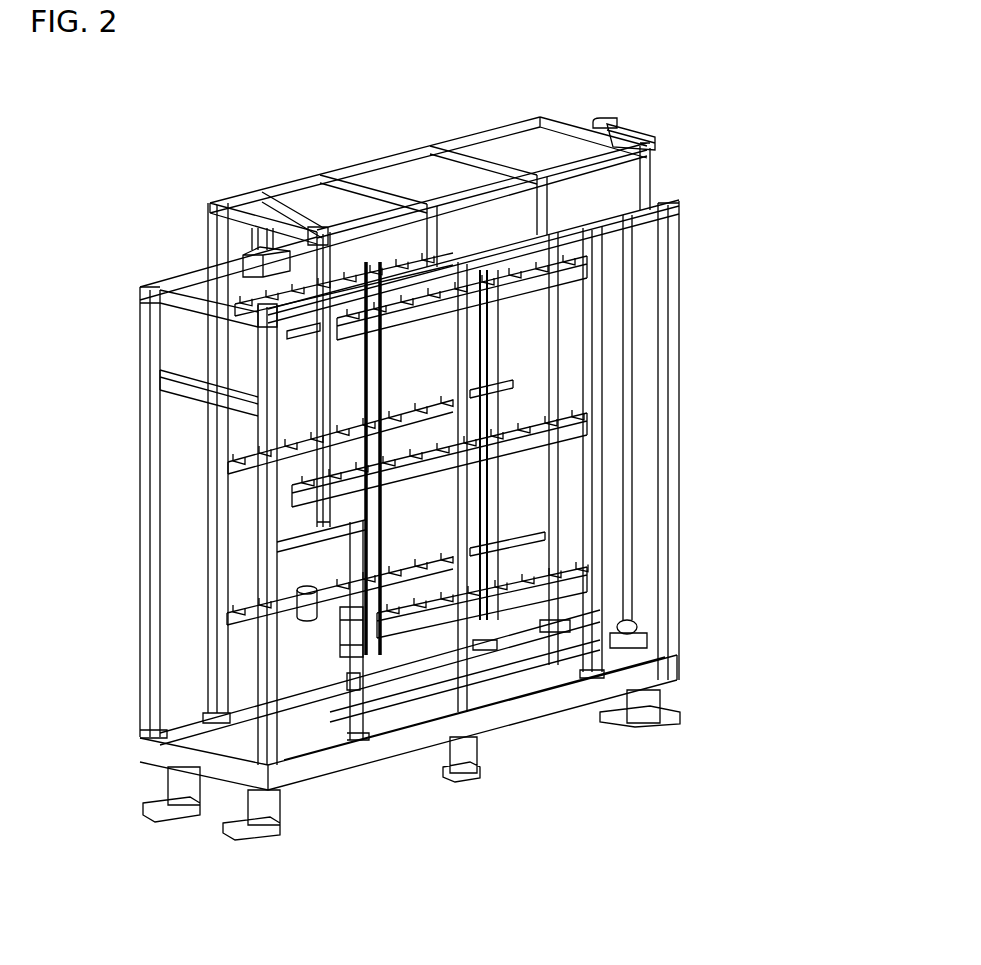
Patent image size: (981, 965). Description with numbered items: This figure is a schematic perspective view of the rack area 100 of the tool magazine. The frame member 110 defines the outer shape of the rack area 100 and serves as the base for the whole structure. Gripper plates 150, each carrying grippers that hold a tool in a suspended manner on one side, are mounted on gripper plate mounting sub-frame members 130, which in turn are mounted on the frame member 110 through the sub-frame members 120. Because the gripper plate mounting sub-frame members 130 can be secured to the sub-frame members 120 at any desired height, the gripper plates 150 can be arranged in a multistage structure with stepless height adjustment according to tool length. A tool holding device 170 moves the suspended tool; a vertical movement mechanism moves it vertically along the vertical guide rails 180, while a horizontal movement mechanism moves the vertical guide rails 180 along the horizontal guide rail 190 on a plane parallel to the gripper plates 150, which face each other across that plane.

The rack area 100 is at (763, 311).
The frame member 110 is at (663, 210).
The sub-frame members 120 is at (545, 553).
The gripper plate mounting sub-frame members 130 is at (548, 588).
The gripper plates 150 is at (280, 292).
The tool holding device 170 is at (305, 600).
The vertical guide rails 180 is at (250, 413).
The horizontal guide rail 190 is at (463, 213).